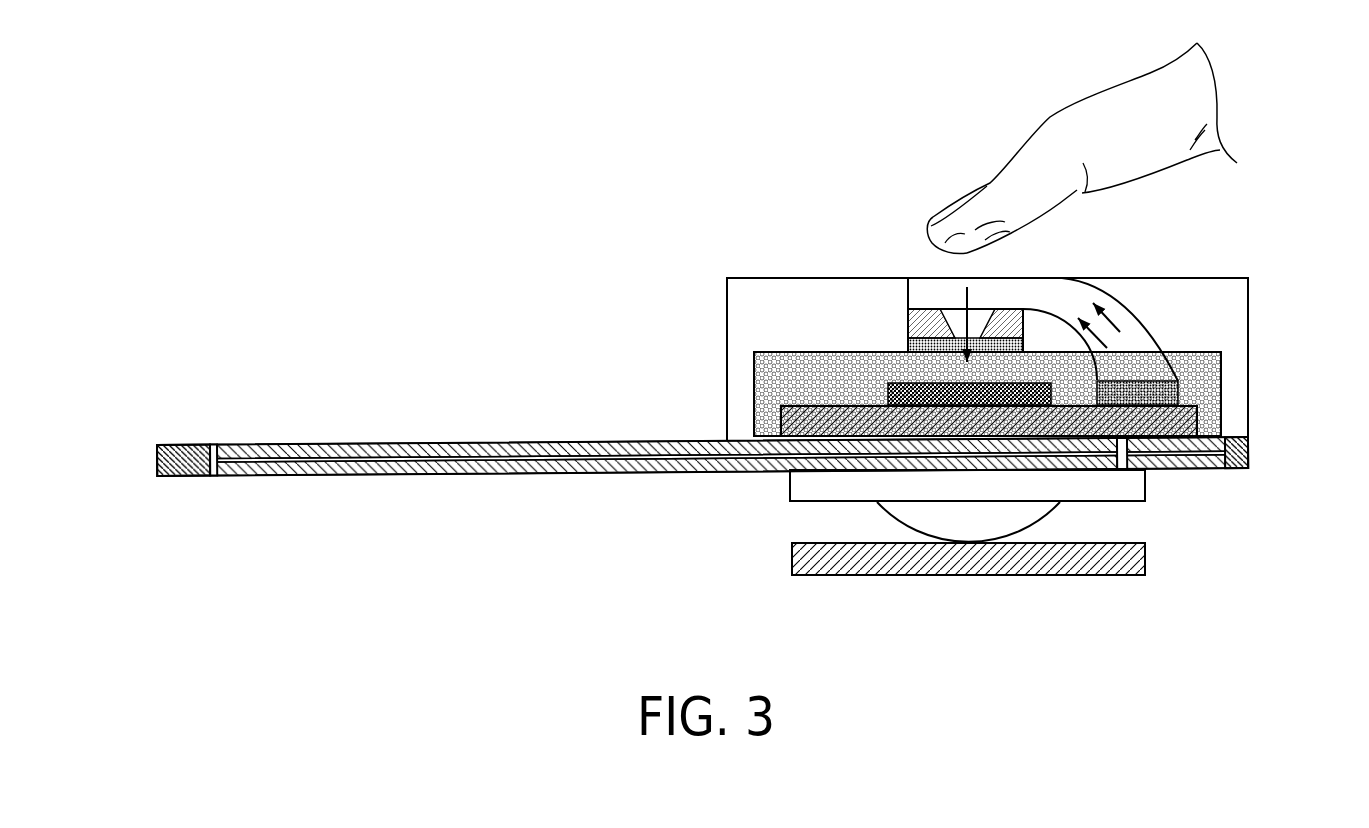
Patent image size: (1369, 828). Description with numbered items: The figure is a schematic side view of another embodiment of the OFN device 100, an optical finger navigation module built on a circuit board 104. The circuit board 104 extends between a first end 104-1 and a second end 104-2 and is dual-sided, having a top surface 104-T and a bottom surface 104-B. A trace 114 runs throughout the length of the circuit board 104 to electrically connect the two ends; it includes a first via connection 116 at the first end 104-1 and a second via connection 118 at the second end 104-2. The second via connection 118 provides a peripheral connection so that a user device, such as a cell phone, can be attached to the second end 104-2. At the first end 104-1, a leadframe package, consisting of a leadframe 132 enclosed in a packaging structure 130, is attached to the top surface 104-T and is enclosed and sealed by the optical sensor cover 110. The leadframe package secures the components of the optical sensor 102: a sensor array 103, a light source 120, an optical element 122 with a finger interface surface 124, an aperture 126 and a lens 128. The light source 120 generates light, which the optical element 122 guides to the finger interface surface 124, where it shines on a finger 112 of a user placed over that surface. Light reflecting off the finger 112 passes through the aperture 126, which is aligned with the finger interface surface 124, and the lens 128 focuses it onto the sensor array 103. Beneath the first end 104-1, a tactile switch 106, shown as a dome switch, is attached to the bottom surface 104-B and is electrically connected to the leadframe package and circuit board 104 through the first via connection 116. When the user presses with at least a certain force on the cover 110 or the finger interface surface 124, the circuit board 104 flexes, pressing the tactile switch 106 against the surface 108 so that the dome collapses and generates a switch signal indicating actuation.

The OFN device 100 is at (604, 101).
The optical sensor 102 is at (1238, 386).
The sensor array 103 is at (889, 382).
The circuit board 104 is at (632, 440).
The top surface of the circuit board 104-T is at (425, 344).
The bottom surface of the circuit board 104-B is at (426, 542).
The first end of the circuit board 104-1 is at (1221, 492).
The second end of the circuit board 104-2 is at (181, 507).
The tactile switch 106 is at (800, 502).
The surface 108 is at (1113, 575).
The optical sensor cover 110 is at (757, 279).
The finger 112 is at (1018, 148).
The trace 114 is at (609, 461).
The first via connection 116 is at (1121, 468).
The second via connection 118 is at (212, 445).
The light source 120 is at (1151, 380).
The optical element 122 is at (1133, 278).
The finger interface surface 124 is at (933, 279).
The aperture 126 is at (925, 325).
The lens 128 is at (907, 338).
The packaging structure 130 is at (760, 357).
The leadframe 132 is at (781, 406).